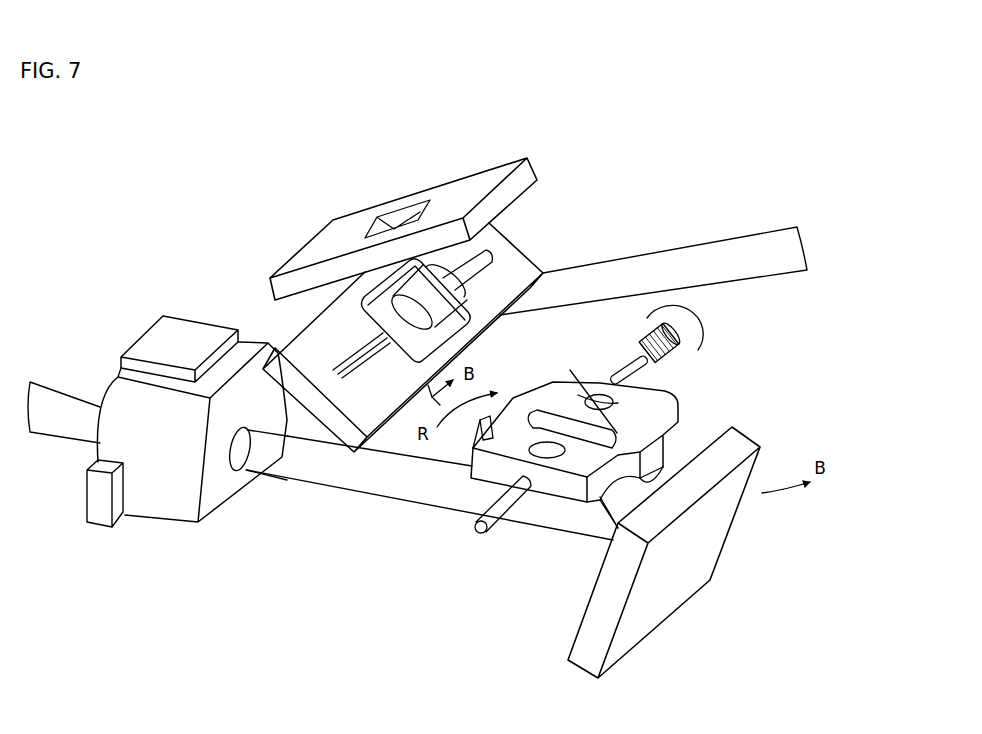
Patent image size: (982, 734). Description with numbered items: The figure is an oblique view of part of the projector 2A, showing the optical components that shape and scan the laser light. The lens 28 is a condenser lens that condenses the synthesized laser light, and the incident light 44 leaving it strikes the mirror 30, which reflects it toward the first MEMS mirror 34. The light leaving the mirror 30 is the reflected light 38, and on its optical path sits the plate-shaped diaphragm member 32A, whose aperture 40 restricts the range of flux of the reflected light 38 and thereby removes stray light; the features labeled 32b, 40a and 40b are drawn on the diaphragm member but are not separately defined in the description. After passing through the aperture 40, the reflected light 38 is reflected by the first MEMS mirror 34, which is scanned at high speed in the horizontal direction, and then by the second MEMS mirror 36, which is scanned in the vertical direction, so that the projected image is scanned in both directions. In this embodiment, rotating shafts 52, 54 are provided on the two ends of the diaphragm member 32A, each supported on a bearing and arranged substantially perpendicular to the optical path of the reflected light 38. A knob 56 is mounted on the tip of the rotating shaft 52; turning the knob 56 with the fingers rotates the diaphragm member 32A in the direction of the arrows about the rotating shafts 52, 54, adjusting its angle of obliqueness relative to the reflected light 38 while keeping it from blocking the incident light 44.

The projector 2A is at (673, 163).
The lens 28 is at (165, 507).
The mirror 30 is at (662, 603).
The diaphragm member 32A is at (647, 397).
The shaft portion 32b is at (594, 375).
The first MEMS mirror 34 is at (463, 192).
The second MEMS mirror 36 is at (507, 253).
The reflected light 38 is at (507, 350).
The aperture 40 is at (591, 447).
The holder step portion 40a is at (677, 410).
The holder front portion 40b is at (520, 395).
The incident light 44 is at (383, 492).
The rotating shaft 52 is at (672, 370).
The rotating shaft 54 is at (505, 530).
The knob 56 is at (687, 333).